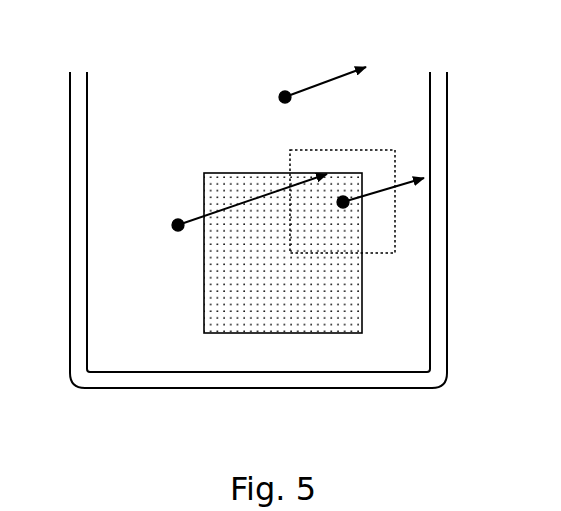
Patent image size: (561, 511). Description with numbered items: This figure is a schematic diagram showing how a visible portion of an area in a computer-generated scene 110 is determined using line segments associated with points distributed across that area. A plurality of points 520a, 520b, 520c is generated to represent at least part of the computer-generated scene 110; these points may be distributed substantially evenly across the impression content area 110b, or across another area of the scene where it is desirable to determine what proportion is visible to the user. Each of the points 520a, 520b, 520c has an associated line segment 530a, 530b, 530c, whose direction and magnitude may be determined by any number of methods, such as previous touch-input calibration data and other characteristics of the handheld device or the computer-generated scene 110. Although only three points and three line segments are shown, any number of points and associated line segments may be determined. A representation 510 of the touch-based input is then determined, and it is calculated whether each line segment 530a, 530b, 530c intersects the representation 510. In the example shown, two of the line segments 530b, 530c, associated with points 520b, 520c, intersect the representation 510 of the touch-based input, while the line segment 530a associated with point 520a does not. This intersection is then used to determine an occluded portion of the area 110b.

The computer-generated scene 110 is at (146, 98).
The impression content area 110b is at (343, 333).
The representation of the touch-based input 510 is at (363, 150).
The point 520a is at (283, 103).
The point 520b is at (178, 228).
The point 520c is at (345, 206).
The line segment 530a is at (352, 33).
The line segment 530b is at (212, 215).
The line segment 530c is at (394, 193).